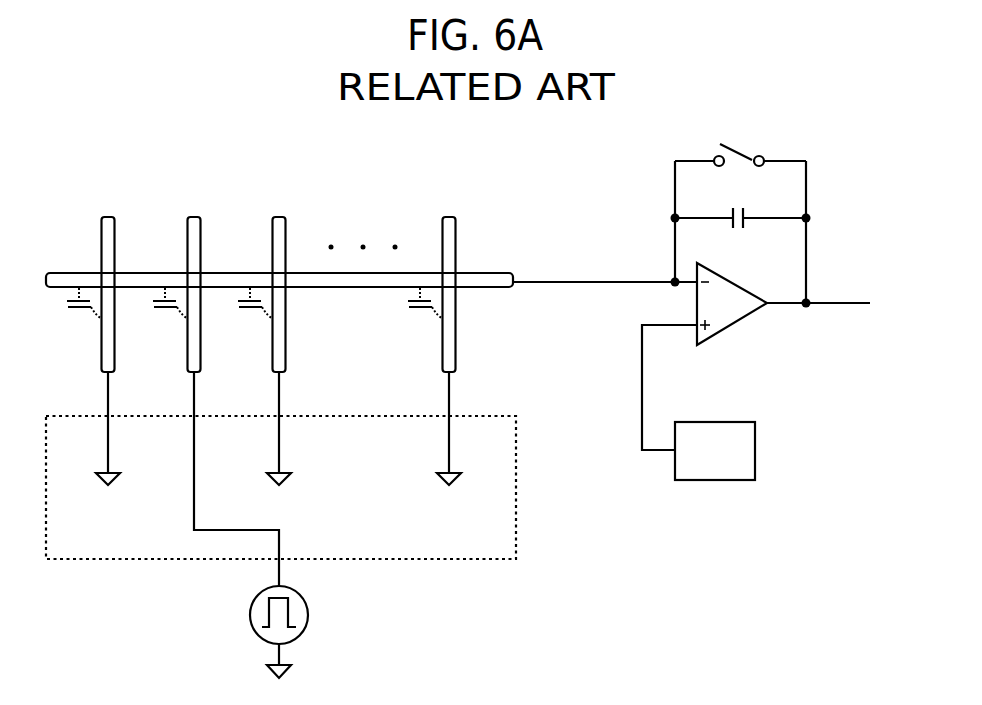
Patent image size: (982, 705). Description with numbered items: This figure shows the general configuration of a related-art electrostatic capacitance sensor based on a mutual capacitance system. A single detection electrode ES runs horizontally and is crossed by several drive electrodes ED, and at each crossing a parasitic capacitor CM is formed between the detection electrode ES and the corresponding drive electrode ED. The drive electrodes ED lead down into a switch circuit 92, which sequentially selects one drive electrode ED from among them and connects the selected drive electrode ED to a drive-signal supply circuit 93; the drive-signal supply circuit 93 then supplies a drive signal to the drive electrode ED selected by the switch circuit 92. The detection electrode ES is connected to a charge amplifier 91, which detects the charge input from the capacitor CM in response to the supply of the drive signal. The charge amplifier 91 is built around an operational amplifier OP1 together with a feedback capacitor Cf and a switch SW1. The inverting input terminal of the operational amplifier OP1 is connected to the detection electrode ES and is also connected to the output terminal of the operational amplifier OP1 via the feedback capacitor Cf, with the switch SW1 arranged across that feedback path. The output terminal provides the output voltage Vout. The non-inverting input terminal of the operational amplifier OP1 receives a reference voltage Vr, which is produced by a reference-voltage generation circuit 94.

The drive electrode ED is at (108, 217).
The detection electrode ES is at (46, 273).
The parasitic capacitor CM is at (70, 303).
The switch SW1 is at (750, 145).
The feedback capacitor Cf is at (738, 197).
The operational amplifier OP1 is at (733, 280).
The charge amplifier 91 is at (786, 271).
The switch circuit 92 is at (497, 414).
The drive-signal supply circuit 93 is at (308, 610).
The reference-voltage generation circuit 94 is at (718, 422).
The output voltage Vout is at (901, 304).
The reference voltage Vr is at (617, 441).